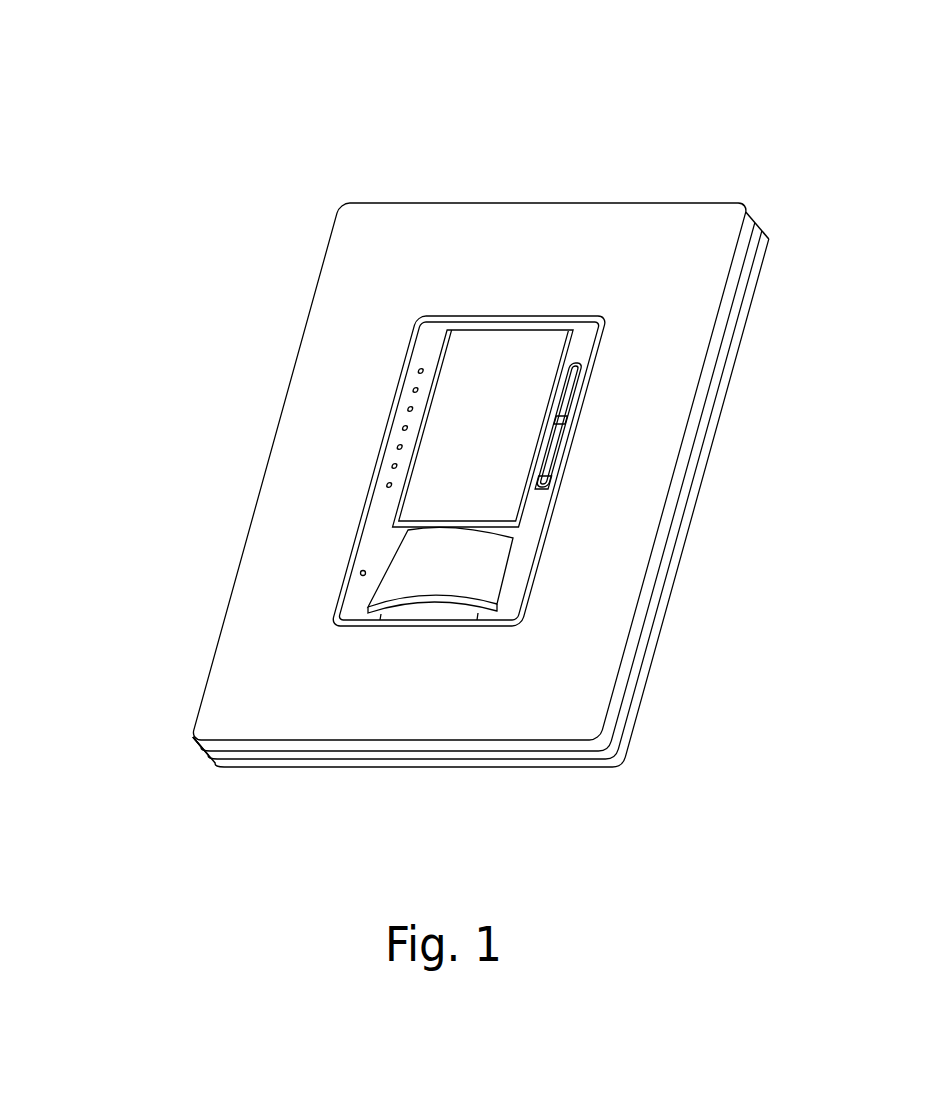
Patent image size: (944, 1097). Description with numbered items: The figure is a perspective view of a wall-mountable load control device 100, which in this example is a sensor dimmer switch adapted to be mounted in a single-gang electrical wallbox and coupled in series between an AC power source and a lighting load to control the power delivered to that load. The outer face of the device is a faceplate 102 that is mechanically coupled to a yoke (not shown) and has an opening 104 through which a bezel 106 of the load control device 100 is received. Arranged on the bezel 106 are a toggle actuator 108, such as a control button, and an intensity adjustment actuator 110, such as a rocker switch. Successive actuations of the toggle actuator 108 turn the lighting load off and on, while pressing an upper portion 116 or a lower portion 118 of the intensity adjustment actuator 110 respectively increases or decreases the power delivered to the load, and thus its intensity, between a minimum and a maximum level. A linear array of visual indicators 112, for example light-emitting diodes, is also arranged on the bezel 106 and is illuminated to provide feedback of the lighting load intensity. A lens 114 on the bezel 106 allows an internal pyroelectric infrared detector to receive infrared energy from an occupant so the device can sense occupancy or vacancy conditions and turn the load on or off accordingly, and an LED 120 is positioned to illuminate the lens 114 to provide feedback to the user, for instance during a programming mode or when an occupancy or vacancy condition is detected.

The wall-mountable load control device 100 is at (317, 76).
The faceplate 102 is at (248, 682).
The opening 104 is at (385, 442).
The bezel 106 is at (589, 336).
The toggle actuator 108 is at (492, 362).
The intensity adjustment actuator 110 is at (590, 431).
The visual indicators 112 is at (381, 502).
The lens 114 is at (430, 578).
The upper portion 116 is at (577, 380).
The lower portion 118 is at (555, 468).
The LED 120 is at (357, 576).